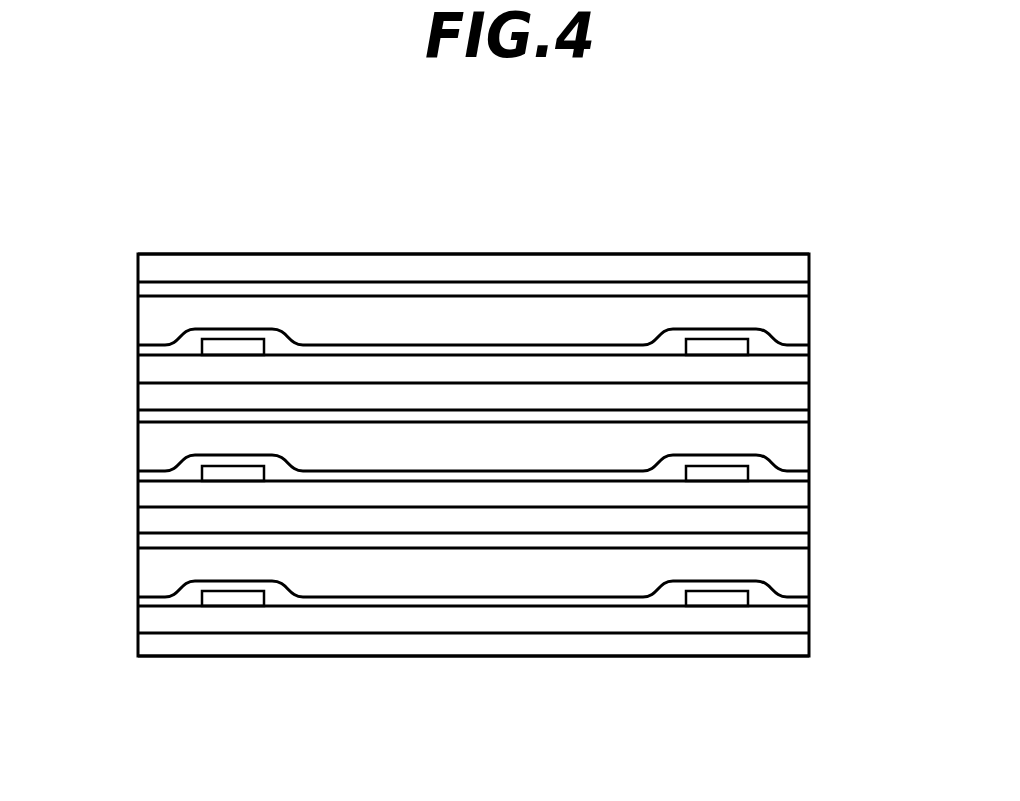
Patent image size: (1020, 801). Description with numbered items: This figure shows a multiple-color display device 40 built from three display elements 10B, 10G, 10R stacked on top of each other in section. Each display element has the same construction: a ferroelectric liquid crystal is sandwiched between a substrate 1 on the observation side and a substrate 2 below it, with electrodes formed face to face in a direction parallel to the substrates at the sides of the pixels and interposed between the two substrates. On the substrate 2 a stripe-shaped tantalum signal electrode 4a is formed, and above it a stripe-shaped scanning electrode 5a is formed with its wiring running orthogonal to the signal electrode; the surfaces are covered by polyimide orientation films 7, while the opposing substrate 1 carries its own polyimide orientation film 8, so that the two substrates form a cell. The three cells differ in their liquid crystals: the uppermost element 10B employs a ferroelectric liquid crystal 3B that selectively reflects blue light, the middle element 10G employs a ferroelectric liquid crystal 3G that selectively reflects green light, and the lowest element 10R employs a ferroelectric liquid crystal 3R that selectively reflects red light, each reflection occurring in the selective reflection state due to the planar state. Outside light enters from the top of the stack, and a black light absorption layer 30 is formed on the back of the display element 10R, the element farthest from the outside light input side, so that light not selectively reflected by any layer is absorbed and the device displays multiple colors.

The organic EL display device 40 is at (190, 180).
The substrate 1 is at (155, 272).
The substrate 2 is at (155, 369).
The orientation film 8 is at (603, 288).
The ferroelectric liquid crystal 3B is at (252, 307).
The ferroelectric liquid crystal 3G is at (528, 453).
The ferroelectric liquid crystal 3R is at (615, 583).
The scanning electrode 5a is at (727, 338).
The signal electrode 4a is at (235, 606).
The orientation film 7 is at (408, 603).
The light absorption layer 30 is at (725, 655).
The display element 10B is at (830, 254).
The display element 10G is at (830, 383).
The display element 10R is at (830, 508).